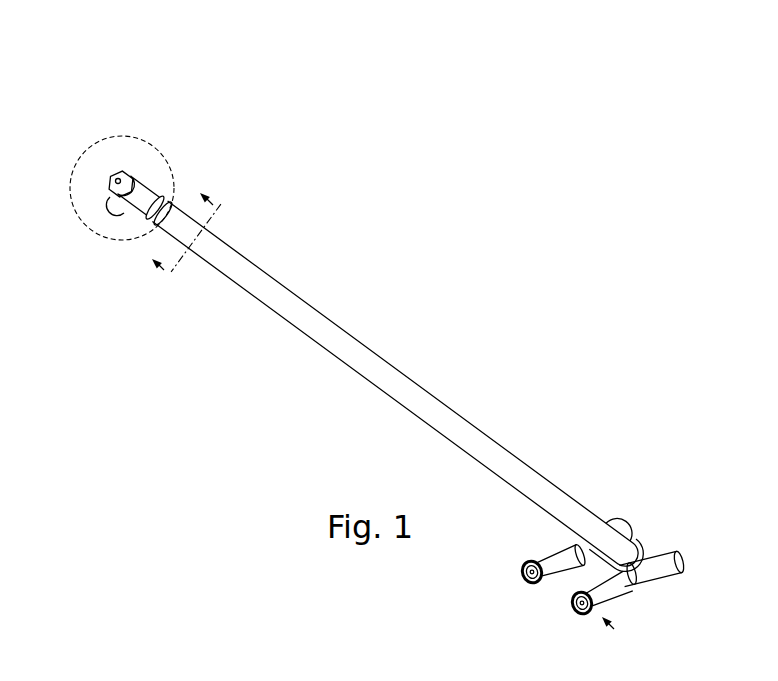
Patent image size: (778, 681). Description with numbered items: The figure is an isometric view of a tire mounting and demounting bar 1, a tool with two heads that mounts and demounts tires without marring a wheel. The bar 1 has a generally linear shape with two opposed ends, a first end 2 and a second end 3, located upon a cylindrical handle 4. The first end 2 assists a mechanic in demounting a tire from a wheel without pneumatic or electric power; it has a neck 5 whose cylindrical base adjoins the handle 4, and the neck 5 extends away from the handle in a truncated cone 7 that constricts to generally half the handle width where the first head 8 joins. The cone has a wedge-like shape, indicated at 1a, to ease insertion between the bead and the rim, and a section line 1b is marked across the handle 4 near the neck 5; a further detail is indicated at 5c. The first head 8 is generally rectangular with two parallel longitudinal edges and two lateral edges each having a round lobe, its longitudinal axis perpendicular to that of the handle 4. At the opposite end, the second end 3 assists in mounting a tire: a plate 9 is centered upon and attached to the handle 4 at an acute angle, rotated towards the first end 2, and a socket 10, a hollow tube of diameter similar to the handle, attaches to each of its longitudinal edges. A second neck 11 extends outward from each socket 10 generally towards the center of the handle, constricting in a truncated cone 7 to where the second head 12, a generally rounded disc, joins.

The tire mounting and demounting bar 1 is at (140, 80).
The wedge shape detail of cone 1a is at (96, 143).
The section line 1b is at (184, 231).
The first end 2 is at (132, 150).
The second end 3 is at (648, 475).
The cylindrical handle 4 is at (456, 420).
The neck 5 is at (148, 160).
The handle feature 5c is at (225, 680).
The truncated cone 7 is at (132, 212).
The first head 8 is at (110, 213).
The plate 9 is at (644, 541).
The socket 10 is at (617, 515).
The second neck 11 is at (614, 630).
The second head 12 is at (588, 614).